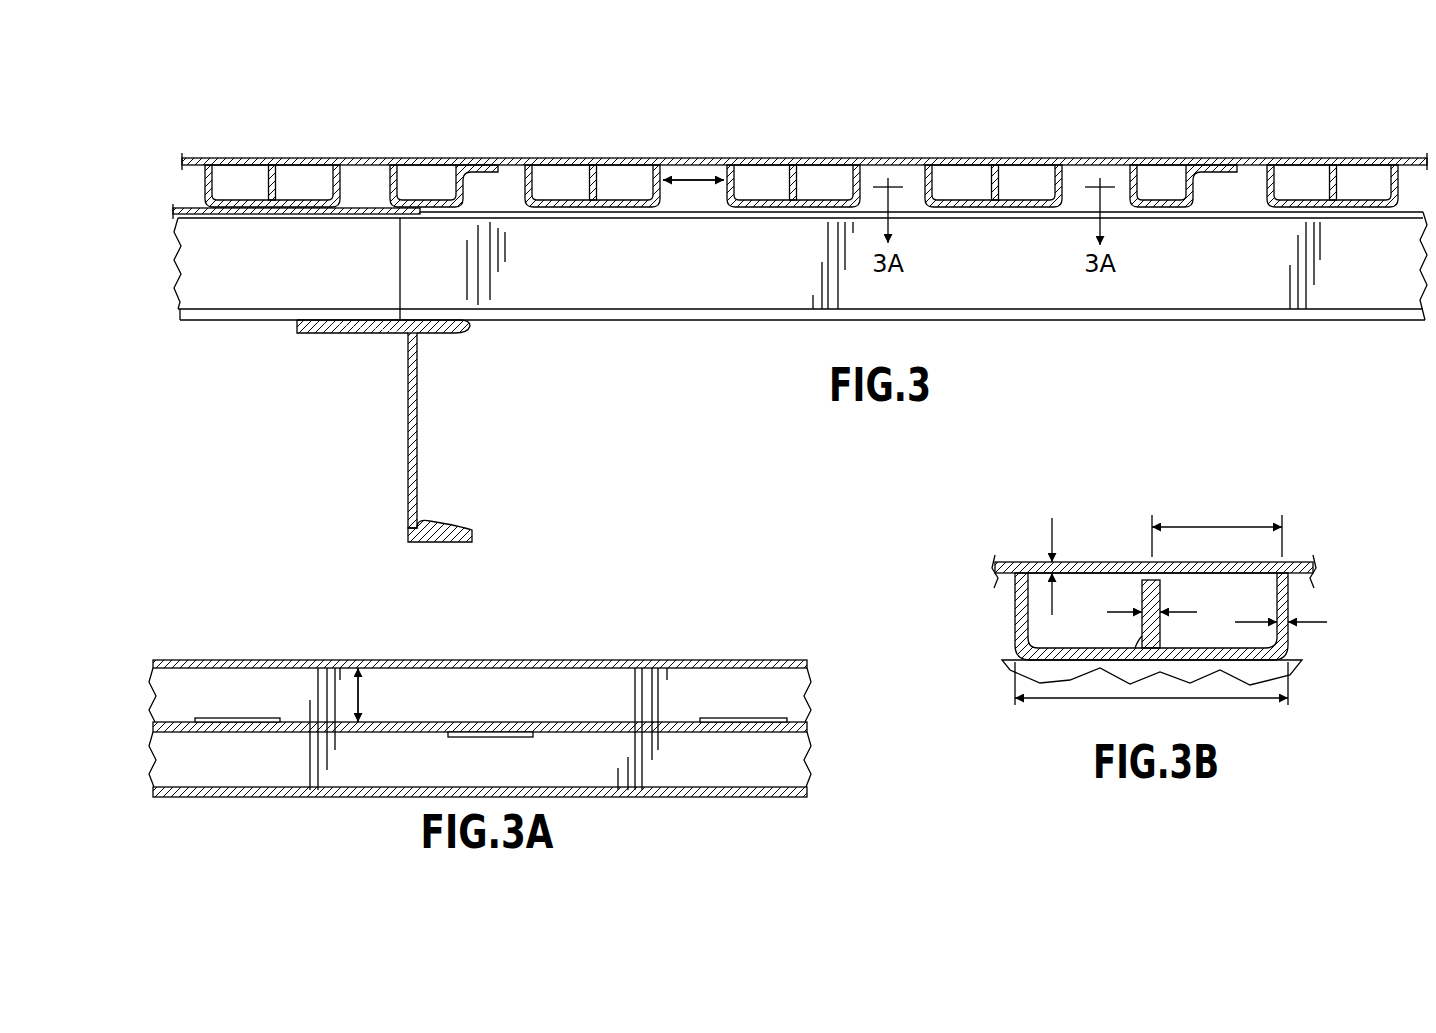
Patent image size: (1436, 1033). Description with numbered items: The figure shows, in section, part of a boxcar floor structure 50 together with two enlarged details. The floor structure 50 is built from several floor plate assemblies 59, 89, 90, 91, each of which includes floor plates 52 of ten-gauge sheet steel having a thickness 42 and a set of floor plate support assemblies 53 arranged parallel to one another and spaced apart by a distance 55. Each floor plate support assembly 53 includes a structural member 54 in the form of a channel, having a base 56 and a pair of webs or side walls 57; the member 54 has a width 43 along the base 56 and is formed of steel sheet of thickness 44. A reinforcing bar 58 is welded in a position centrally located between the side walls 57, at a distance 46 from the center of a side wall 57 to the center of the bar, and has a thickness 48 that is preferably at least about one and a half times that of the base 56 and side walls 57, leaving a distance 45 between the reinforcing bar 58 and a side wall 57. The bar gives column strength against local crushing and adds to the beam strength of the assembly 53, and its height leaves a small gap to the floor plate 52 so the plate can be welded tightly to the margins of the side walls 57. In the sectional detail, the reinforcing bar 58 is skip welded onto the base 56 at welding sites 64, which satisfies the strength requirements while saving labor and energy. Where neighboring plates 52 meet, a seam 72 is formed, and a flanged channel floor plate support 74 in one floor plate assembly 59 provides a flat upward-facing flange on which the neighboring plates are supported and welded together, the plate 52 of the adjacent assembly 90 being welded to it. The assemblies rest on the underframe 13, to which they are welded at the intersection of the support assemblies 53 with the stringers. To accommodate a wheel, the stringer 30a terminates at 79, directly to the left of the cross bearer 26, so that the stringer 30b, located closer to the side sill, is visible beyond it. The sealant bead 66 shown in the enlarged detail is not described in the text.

In FIG. 3, the underframe 13 is at (295, 472).
In FIG. 3, the cross bearer 26 is at (408, 436).
In FIG. 3, the stringer 30a is at (538, 303).
In FIG. 3, the stringer 30b is at (220, 303).
In FIG. 3B, the thickness 42 is at (1050, 520).
In FIG. 3B, the width 43 is at (1194, 700).
In FIG. 3B, the thickness 44 is at (1310, 622).
In FIG. 3A, the distance 45 is at (362, 695).
In FIG. 3B, the distance 46 is at (1215, 526).
In FIG. 3B, the thickness 48 is at (1178, 612).
In FIG. 3, the floor structure 50 is at (195, 188).
In FIG. 3, the floor plate 52 is at (365, 158).
In FIG. 3B, the floor plate 52 is at (1120, 562).
In FIG. 3, the floor plate support assembly 53 is at (342, 190).
In FIG. 3A, the floor plate support assembly 53 is at (218, 658).
In FIG. 3B, the floor plate support assembly 53 is at (1013, 612).
In FIG. 3, the structural member 54 is at (924, 208).
In FIG. 3A, the structural member 54 is at (757, 660).
In FIG. 3, the distance 55 is at (691, 178).
In FIG. 3, the base 56 is at (1018, 209).
In FIG. 3A, the base 56 is at (795, 690).
In FIG. 3, the side wall 57 is at (930, 178).
In FIG. 3A, the side wall 57 is at (500, 660).
In FIG. 3B, the side wall 57 is at (1290, 603).
In FIG. 3, the reinforcing bar 58 is at (1000, 178).
In FIG. 3A, the reinforcing bar 58 is at (569, 722).
In FIG. 3B, the reinforcing bar 58 is at (1142, 597).
In FIG. 3, the floor plate assembly 59 is at (622, 156).
In FIG. 3A, the welding site 64 is at (237, 718).
In FIG. 3B, the welding site 64 is at (1137, 646).
In FIG. 3B, the sealant bead 66 is at (1075, 660).
In FIG. 3, the seam 72 is at (476, 165).
In FIG. 3, the flanged channel floor plate support 74 is at (395, 178).
In FIG. 3, the termination of stringer 79 is at (400, 285).
In FIG. 3, the floor plate assembly 89 is at (222, 152).
In FIG. 3, the floor plate assembly 90 is at (1310, 152).
In FIG. 3, the floor plate assembly 91 is at (884, 152).